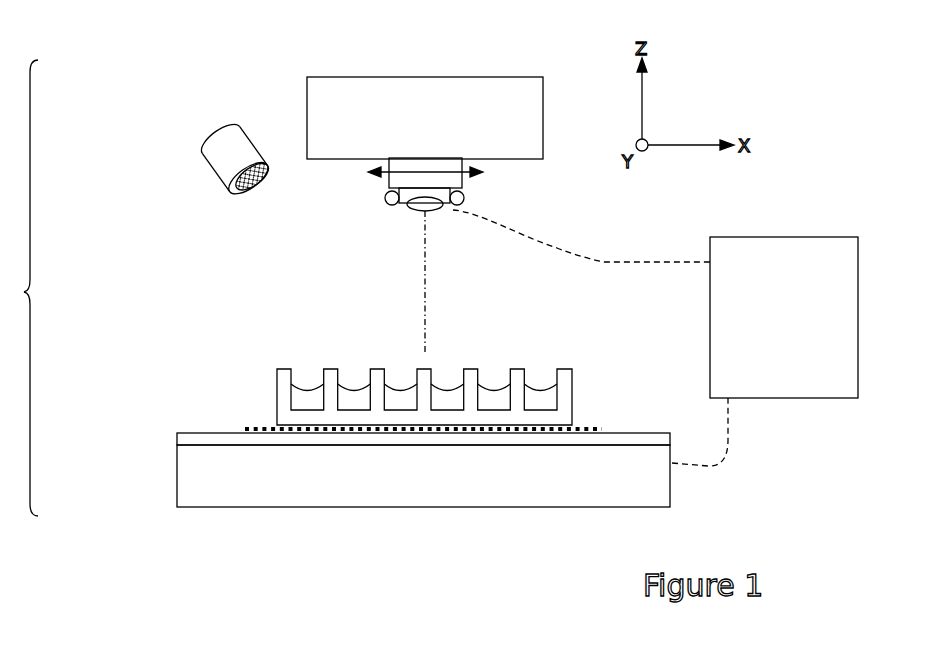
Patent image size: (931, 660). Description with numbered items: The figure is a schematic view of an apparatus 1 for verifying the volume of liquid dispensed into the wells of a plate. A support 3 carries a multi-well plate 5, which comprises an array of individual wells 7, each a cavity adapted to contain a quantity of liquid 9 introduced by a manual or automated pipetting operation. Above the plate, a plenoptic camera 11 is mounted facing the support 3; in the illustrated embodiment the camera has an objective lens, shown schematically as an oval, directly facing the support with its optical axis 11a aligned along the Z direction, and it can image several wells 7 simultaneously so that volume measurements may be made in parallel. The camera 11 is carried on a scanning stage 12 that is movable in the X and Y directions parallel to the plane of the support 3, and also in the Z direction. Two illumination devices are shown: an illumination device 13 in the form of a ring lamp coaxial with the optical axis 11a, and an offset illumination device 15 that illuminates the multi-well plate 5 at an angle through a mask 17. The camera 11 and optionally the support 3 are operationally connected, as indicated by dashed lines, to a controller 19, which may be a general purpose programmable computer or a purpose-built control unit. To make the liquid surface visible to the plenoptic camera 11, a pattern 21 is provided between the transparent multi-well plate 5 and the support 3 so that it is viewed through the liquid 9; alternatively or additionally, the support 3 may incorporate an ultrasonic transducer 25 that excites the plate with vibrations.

The apparatus 1 is at (23, 288).
The support 3 is at (660, 482).
The multi-well plate 5 is at (567, 386).
The wells 7 is at (496, 362).
The liquid 9 is at (353, 402).
The plenoptic camera 11 is at (437, 207).
The optical axis 11a is at (425, 262).
The scanning stage 12 is at (492, 150).
The illumination device 13 is at (461, 203).
The illumination device 15 is at (218, 170).
The mask 17 is at (238, 202).
The controller 19 is at (773, 237).
The pattern 21 is at (245, 428).
The ultrasonic transducer 25 is at (187, 440).